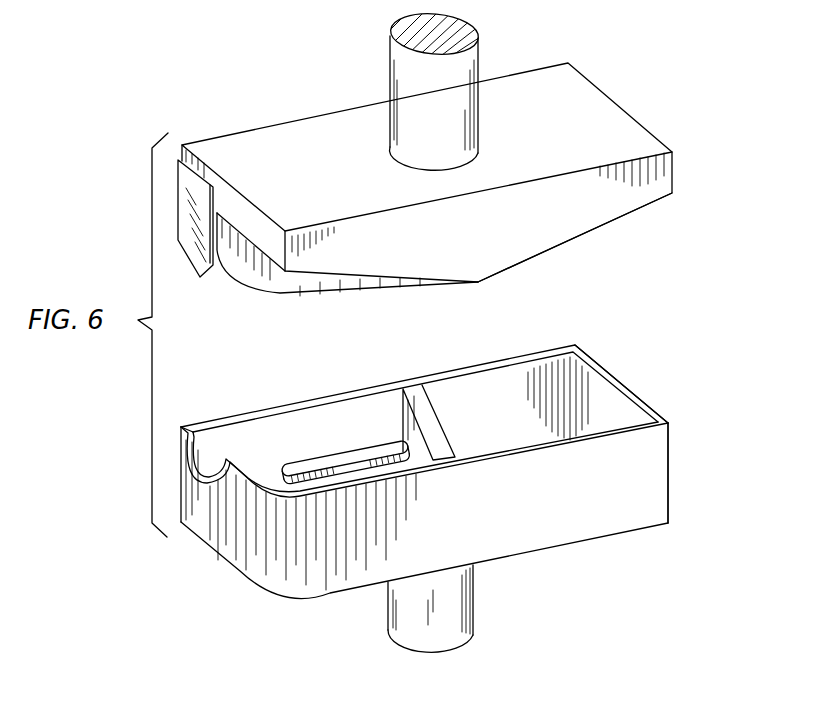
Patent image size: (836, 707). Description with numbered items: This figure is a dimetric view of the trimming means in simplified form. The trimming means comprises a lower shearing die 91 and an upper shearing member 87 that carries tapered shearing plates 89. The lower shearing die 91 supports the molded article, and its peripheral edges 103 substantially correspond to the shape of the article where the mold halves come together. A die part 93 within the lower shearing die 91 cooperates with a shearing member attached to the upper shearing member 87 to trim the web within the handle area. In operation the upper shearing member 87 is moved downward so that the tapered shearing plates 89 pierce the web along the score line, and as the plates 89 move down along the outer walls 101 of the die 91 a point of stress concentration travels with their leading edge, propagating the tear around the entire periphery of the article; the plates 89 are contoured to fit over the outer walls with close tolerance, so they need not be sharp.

The upper shearing member 87 is at (514, 236).
The tapered shearing plates 89 is at (573, 236).
The lower shearing die 91 is at (458, 527).
The die part 93 is at (316, 462).
The outer walls 101 is at (656, 504).
The peripheral edges 103 is at (625, 388).